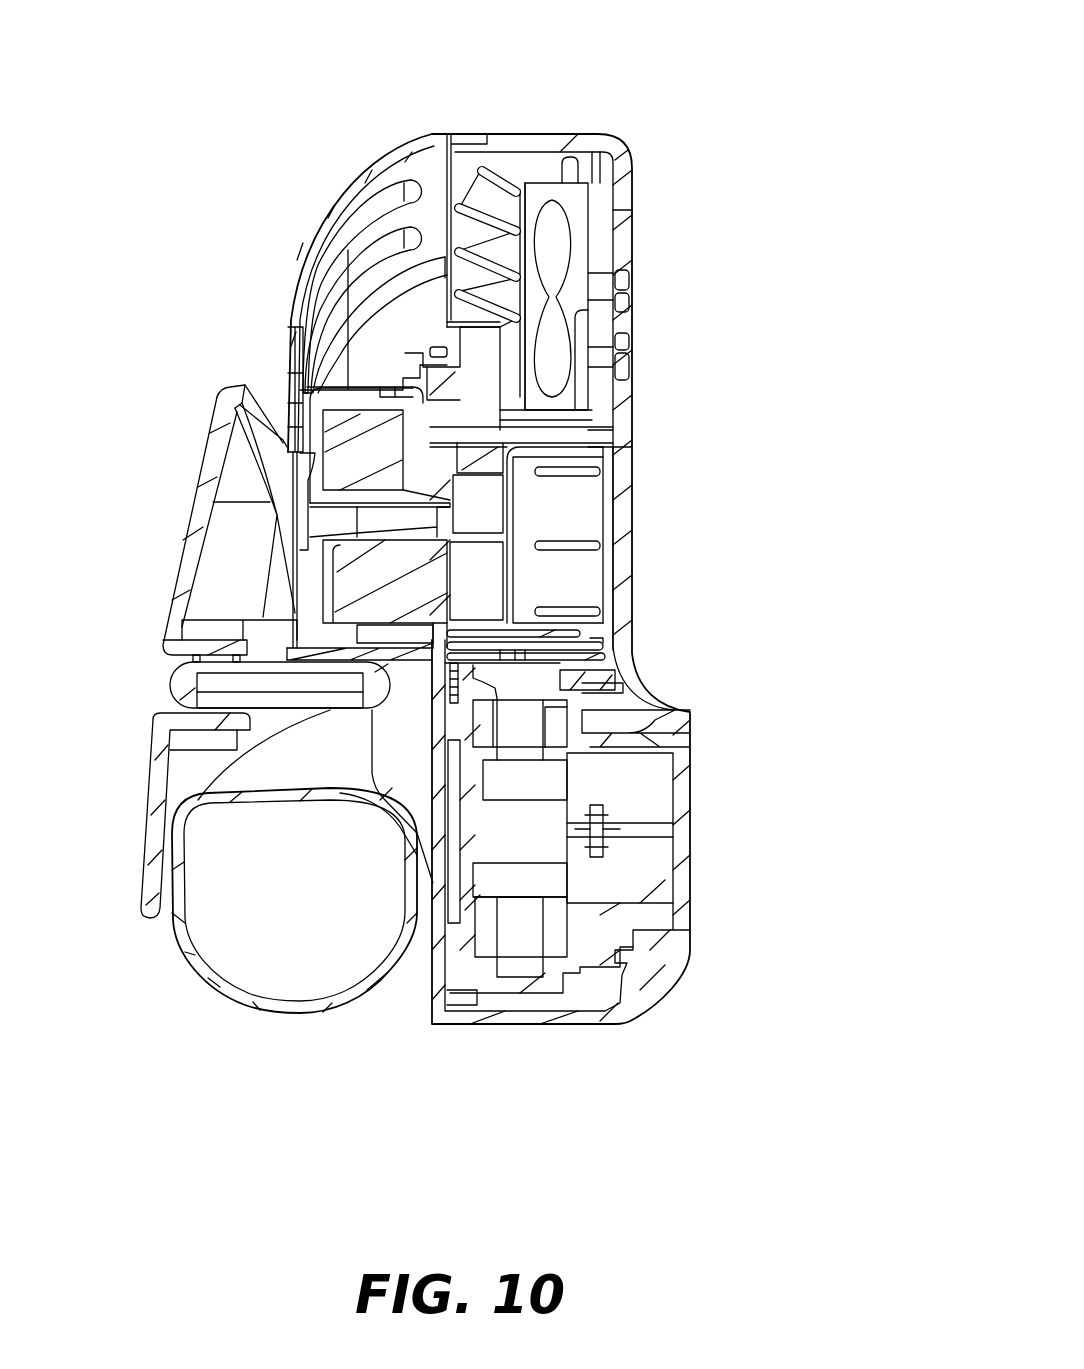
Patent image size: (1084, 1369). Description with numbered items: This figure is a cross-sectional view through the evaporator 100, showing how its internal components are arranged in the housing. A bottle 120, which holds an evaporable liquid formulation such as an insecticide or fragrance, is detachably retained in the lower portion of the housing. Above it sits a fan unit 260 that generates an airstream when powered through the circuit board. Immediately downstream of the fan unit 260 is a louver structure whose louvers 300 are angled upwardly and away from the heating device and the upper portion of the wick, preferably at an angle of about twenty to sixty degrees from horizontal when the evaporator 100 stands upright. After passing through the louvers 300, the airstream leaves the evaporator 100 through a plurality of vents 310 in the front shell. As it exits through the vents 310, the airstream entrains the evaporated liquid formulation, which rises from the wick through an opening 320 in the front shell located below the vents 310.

The evaporator 100 is at (723, 129).
The bottle 120 is at (237, 1002).
The fan unit 260 is at (558, 242).
The louvers 300 is at (473, 213).
The vents 310 is at (377, 255).
The opening 320 is at (277, 401).